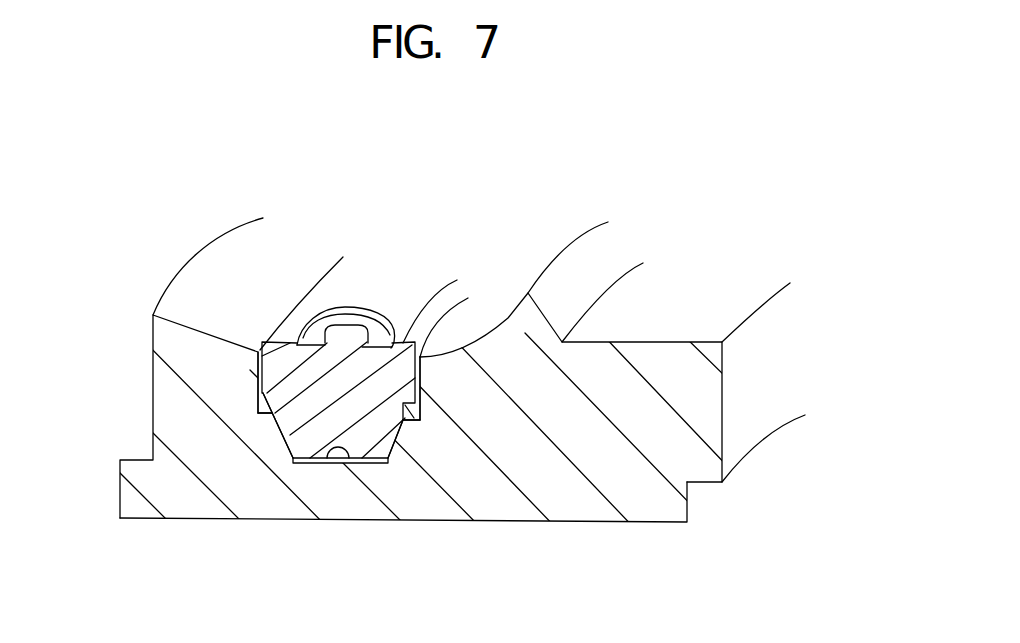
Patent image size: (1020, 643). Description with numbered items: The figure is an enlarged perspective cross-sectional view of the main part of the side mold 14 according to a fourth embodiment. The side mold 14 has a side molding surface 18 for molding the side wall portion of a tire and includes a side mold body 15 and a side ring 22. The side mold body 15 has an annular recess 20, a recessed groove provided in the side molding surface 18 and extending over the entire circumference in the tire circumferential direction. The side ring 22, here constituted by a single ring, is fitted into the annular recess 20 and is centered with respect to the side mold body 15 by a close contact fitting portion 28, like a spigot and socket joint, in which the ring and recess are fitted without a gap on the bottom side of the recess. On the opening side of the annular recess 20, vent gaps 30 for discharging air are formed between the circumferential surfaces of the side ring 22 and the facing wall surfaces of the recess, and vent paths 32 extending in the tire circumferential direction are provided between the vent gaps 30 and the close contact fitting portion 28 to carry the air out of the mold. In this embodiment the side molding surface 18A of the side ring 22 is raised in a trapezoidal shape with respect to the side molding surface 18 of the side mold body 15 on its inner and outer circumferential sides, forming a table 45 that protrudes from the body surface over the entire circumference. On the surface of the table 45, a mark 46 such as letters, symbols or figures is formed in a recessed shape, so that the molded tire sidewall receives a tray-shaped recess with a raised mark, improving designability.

The side mold 14 is at (548, 148).
The side mold body 15 is at (639, 512).
The side molding surface 18 is at (228, 337).
The side molding surface 18A is at (363, 277).
The annular recess 20 is at (348, 463).
The side ring 22 is at (332, 360).
The close contact fitting portion 28 is at (287, 437).
The vent gap 30 is at (257, 363).
The vent path 32 is at (257, 402).
The table 45 is at (297, 307).
The mark 46 is at (382, 318).